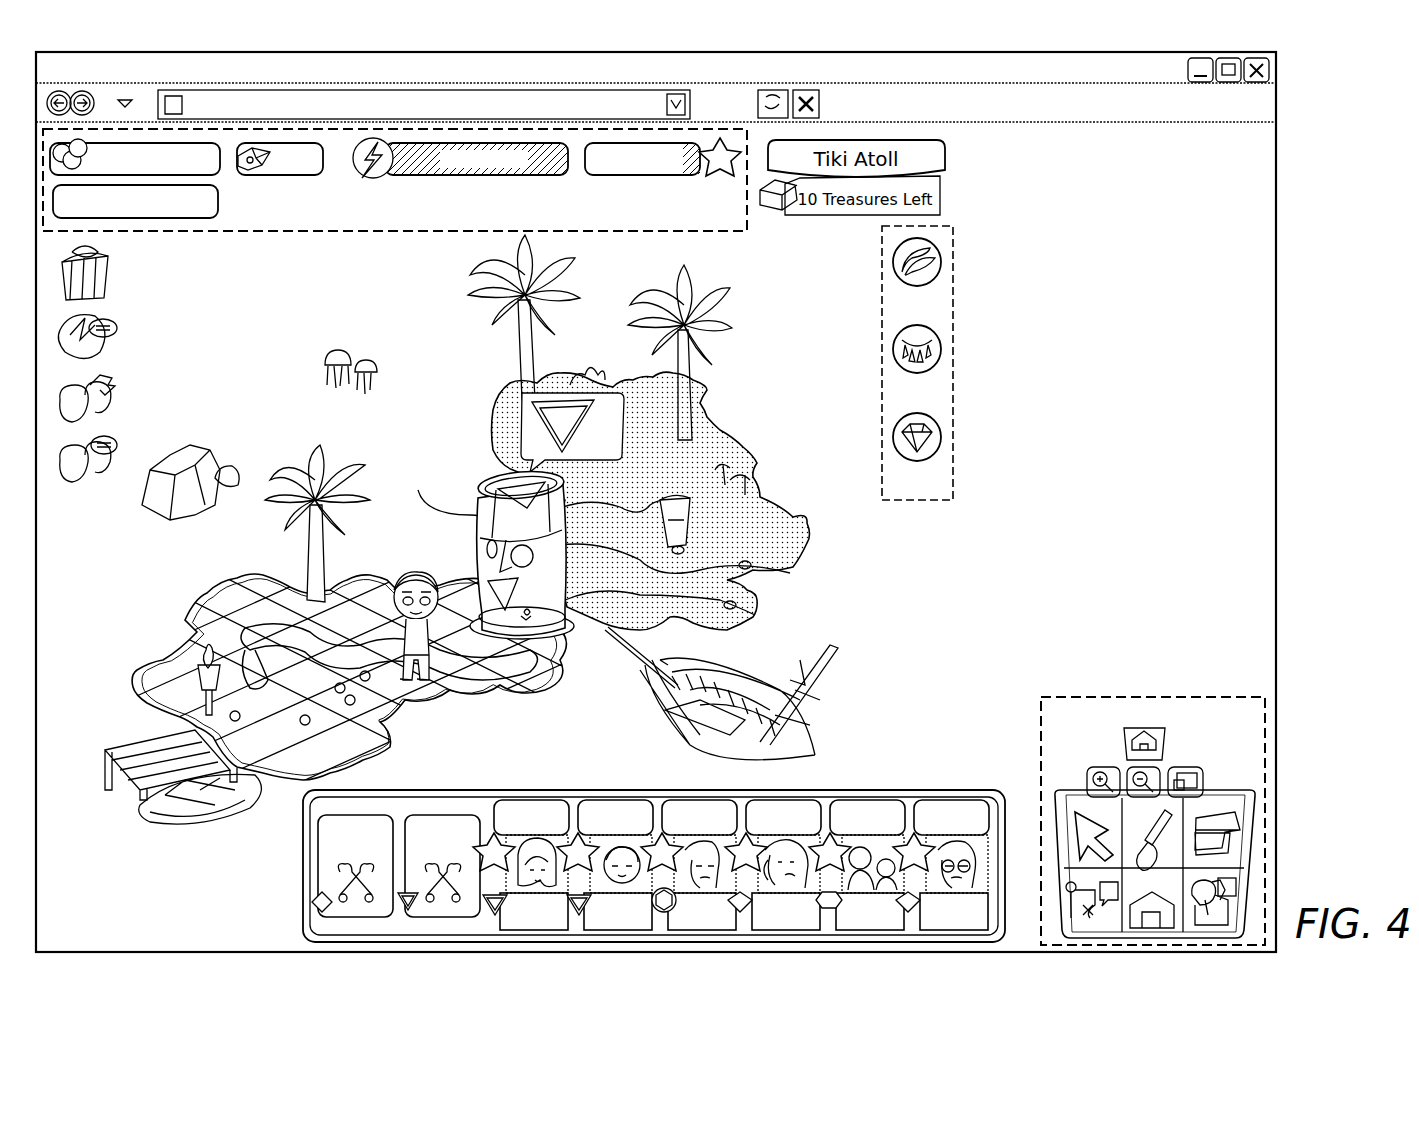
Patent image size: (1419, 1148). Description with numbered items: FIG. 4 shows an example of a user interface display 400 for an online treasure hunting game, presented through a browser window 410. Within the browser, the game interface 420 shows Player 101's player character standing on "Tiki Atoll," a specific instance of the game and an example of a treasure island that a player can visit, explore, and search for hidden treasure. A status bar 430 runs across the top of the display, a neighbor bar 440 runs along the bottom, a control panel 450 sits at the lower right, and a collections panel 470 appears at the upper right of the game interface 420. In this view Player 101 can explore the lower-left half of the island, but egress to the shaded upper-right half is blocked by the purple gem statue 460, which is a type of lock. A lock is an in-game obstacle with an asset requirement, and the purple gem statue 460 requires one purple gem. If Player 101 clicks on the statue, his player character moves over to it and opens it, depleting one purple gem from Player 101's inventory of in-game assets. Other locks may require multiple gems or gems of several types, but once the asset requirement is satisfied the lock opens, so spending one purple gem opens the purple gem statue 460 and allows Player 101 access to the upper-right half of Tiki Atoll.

The Player 101 is at (405, 572).
The graphical user interface 400 is at (1375, 759).
The browser window 410 is at (1281, 104).
The game interface 420 is at (1243, 204).
The status bar 430 is at (208, 232).
The neighbor bar 440 is at (532, 790).
The control panel 450 is at (1213, 698).
The purple gem statue 460 is at (563, 632).
The collections panel 470 is at (953, 312).